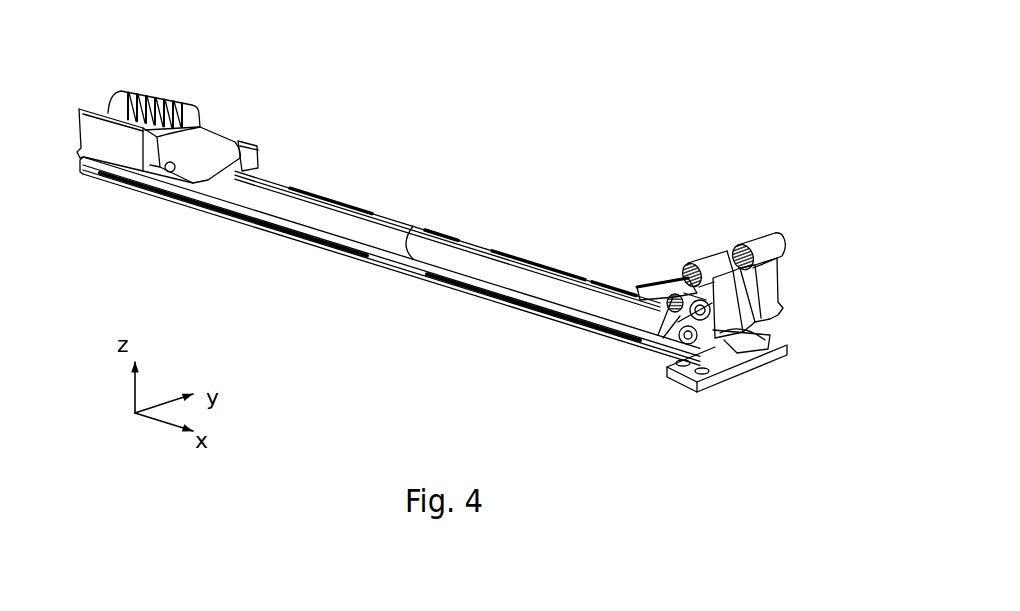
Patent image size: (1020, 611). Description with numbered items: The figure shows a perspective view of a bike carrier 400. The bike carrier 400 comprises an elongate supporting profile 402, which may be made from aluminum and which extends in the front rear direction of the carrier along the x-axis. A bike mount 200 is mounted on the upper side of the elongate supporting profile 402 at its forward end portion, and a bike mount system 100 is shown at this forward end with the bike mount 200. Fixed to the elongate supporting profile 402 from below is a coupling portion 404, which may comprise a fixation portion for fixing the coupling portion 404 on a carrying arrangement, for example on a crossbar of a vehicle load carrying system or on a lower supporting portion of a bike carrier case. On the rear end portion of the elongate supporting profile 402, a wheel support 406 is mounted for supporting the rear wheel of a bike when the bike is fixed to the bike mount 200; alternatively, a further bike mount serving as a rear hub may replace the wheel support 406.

The bike carrier 400 is at (643, 114).
The elongate supporting profile 402 is at (469, 238).
The wheel support 406 is at (195, 88).
The bike mount 200 is at (757, 223).
The coupling device 100 is at (790, 302).
The coupling portion 404 is at (711, 397).